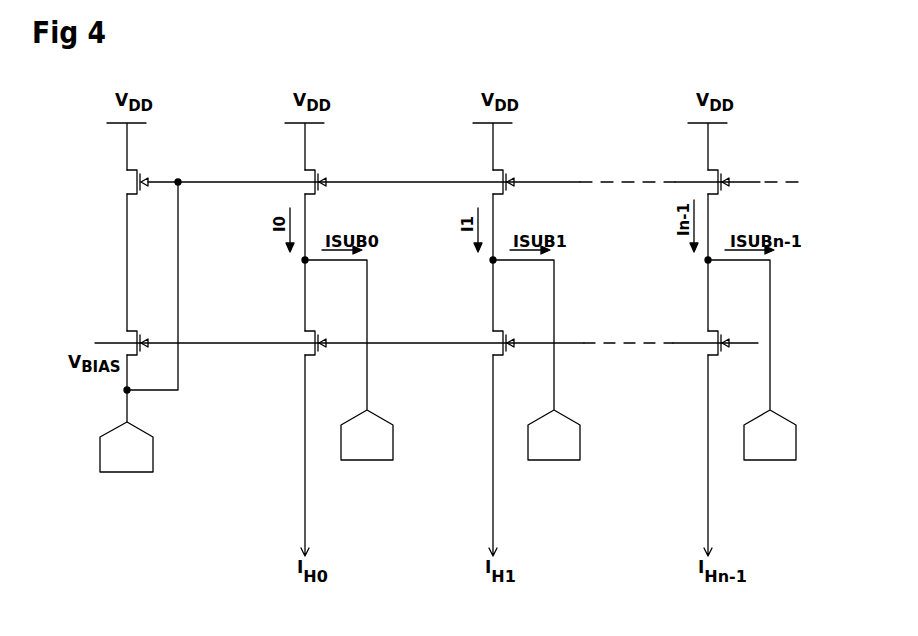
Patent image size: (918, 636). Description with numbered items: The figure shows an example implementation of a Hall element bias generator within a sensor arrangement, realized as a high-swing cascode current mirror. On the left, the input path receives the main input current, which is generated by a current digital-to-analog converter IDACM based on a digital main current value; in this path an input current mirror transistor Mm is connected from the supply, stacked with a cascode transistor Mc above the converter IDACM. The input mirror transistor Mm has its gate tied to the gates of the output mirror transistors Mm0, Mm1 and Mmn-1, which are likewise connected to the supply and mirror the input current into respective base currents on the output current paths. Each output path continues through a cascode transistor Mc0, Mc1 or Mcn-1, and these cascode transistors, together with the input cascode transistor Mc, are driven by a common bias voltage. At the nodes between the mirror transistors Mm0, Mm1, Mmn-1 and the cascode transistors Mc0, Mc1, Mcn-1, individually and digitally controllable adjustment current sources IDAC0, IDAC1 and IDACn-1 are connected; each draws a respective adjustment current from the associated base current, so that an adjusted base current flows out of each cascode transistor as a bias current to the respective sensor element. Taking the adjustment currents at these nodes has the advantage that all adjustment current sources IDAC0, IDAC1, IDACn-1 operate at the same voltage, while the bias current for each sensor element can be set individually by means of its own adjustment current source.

The input current mirror transistor Mm is at (121, 182).
The cascode transistor Mc is at (121, 331).
The current digital-to-analog converter IDACM is at (128, 462).
The mirror transistor Mm0 is at (290, 169).
The cascode transistor Mc0 is at (297, 329).
The adjustment current source IDAC0 is at (352, 376).
The mirror transistor Mm1 is at (479, 169).
The cascode transistor Mc1 is at (485, 329).
The adjustment current source IDAC1 is at (540, 376).
The mirror transistor Mmn-1 is at (684, 169).
The cascode transistor Mcn-1 is at (687, 329).
The adjustment current source IDACn-1 is at (764, 376).